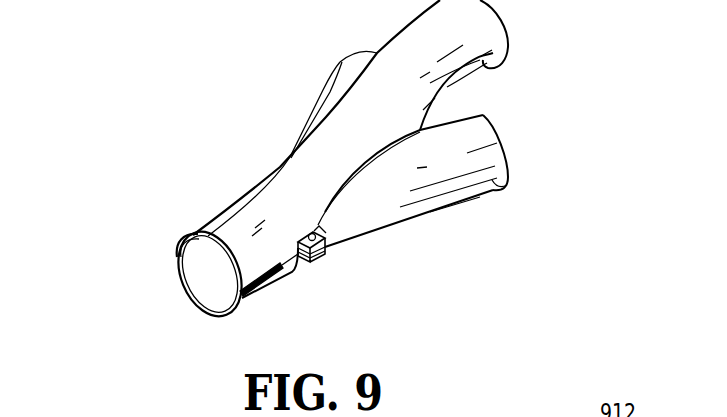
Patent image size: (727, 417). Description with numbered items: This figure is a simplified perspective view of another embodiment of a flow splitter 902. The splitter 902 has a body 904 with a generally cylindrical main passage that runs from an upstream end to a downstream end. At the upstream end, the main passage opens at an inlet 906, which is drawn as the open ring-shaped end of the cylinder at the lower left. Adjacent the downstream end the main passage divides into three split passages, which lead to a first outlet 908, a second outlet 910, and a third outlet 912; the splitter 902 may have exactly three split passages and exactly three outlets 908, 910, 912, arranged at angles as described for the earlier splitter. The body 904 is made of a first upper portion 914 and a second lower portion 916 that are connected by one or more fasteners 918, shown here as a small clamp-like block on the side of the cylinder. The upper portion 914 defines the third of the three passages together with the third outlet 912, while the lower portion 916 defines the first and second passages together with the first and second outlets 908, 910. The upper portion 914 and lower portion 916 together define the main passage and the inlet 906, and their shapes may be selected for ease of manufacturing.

The flow splitter 902 is at (170, 75).
The body 904 is at (247, 225).
The inlet 906 is at (206, 275).
The first outlet 908 is at (507, 189).
The second outlet 910 is at (347, 80).
The third outlet 912 is at (488, 68).
The first upper portion 914 is at (172, 226).
The second lower portion 916 is at (300, 292).
The fastener 918 is at (325, 256).